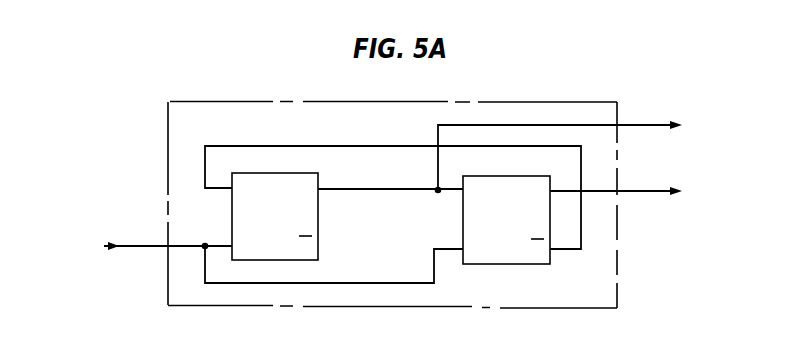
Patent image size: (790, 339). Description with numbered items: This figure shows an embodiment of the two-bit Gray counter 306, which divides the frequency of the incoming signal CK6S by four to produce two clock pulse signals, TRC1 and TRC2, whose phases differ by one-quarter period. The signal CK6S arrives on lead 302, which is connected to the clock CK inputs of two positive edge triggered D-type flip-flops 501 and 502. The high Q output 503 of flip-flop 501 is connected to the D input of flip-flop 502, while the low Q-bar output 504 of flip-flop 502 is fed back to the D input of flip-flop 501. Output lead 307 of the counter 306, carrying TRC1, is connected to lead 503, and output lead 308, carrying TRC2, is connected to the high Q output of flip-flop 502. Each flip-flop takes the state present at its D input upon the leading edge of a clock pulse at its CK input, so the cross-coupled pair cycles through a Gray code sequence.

The 2-bit Gray counter 306 is at (200, 101).
The positive edge triggered D-type flip-flop 501 is at (266, 160).
The positive edge triggered D-type flip-flop 502 is at (493, 177).
The high Q output 503 is at (363, 192).
The low Q-bar output 504 is at (563, 252).
The lead 302 is at (152, 244).
The output lead 307 is at (631, 126).
The output lead 308 is at (639, 181).